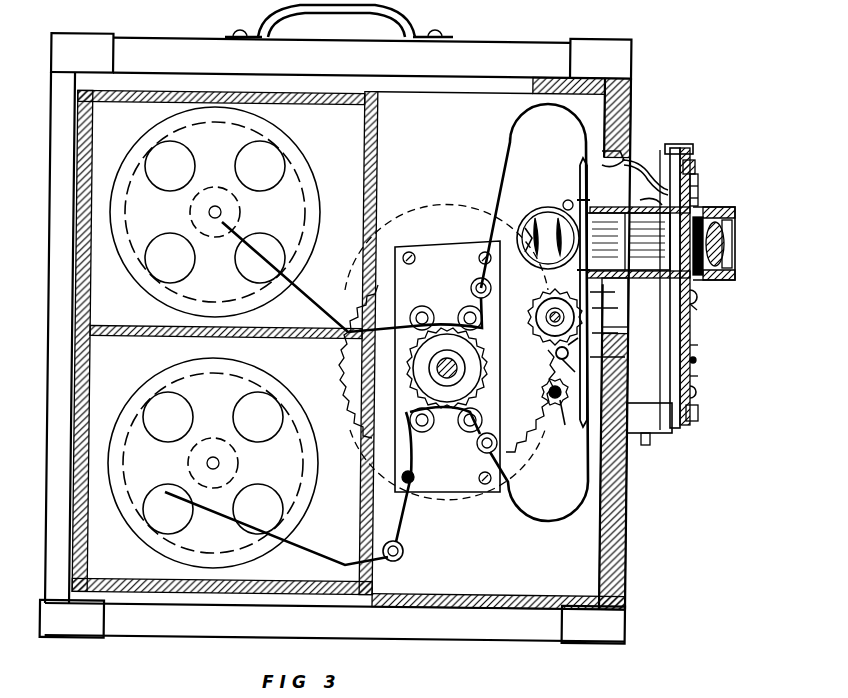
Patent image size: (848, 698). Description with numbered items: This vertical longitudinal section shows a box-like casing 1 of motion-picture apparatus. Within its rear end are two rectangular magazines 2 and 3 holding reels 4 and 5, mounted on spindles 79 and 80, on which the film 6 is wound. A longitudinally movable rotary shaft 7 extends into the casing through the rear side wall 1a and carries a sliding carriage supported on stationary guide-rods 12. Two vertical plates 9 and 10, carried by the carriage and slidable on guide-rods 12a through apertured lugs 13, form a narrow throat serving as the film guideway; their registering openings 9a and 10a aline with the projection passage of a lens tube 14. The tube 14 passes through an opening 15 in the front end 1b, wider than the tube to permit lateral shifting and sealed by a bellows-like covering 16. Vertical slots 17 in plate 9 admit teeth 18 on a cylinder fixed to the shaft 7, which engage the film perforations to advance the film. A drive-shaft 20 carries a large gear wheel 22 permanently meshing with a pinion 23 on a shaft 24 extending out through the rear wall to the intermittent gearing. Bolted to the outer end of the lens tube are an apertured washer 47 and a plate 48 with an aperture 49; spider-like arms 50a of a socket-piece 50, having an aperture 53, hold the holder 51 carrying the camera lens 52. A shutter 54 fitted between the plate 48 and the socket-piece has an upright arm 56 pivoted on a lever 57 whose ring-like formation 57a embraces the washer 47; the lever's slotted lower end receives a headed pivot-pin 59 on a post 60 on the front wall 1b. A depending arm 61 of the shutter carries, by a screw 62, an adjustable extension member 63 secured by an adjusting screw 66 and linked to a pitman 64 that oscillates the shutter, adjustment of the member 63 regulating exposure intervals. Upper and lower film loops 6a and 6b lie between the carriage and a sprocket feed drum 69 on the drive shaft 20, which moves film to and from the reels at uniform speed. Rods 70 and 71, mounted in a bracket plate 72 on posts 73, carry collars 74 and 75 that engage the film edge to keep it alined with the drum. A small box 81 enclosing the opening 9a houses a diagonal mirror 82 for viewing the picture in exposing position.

The casing 1 is at (162, 78).
The rear side wall 1a is at (400, 166).
The front end 1b is at (618, 512).
The magazine 2 is at (370, 182).
The magazine 3 is at (140, 588).
The reel 4 is at (318, 230).
The reel 5 is at (315, 472).
The film 6 is at (406, 526).
The upper loop 6a is at (512, 138).
The lower loop 6b is at (547, 519).
The rotary shaft 7 is at (546, 318).
The plate 9 is at (579, 186).
The film-exposing opening 9a is at (563, 206).
The plate 10 is at (612, 385).
The film-exposing opening 10a is at (652, 198).
The guide-rods 12 is at (556, 362).
The guide-rods 12a is at (616, 292).
The apertured lugs 13 is at (618, 308).
The lens tube 14 is at (648, 172).
The opening 15 is at (622, 158).
The bellows-like covering 16 is at (656, 156).
The vertical slots 17 is at (638, 242).
The teeth 18 is at (556, 352).
The drive-shaft 20 is at (447, 360).
The large gear wheel 22 is at (518, 430).
The pinion 23 is at (553, 406).
The shaft 24 is at (567, 422).
The washer 47 is at (699, 190).
The plate 48 is at (698, 180).
The aperture 49 is at (699, 203).
The socket-piece 50 is at (698, 297).
The spider-like arms 50a is at (712, 308).
The holder 51 is at (736, 272).
The camera lens 52 is at (726, 244).
The aperture 53 is at (736, 222).
The shutter 54 is at (733, 258).
The upright arm 56 is at (696, 166).
The lever 57 is at (672, 340).
The ring-like formation 57a is at (680, 148).
The pivot-pin 59 is at (674, 430).
The post 60 is at (645, 445).
The depending arm 61 is at (698, 346).
The screw 62 is at (697, 393).
The extension member 63 is at (698, 377).
The pitman 64 is at (699, 413).
The adjusting screw 66 is at (697, 361).
The feed drum 69 is at (446, 426).
The rod 70 is at (471, 289).
The rod 71 is at (477, 444).
The supporting plate 72 is at (450, 258).
The posts 73 is at (487, 502).
The collar 74 is at (466, 310).
The collar 75 is at (480, 478).
The spindle 79 is at (208, 212).
The spindle 80 is at (206, 463).
The box 81 is at (535, 218).
The mirror 82 is at (522, 236).